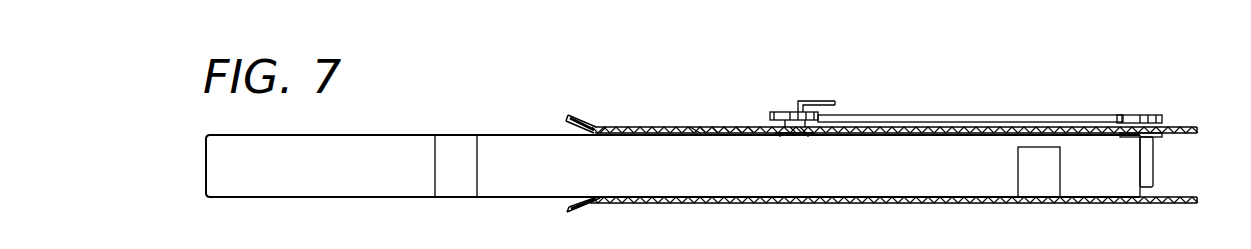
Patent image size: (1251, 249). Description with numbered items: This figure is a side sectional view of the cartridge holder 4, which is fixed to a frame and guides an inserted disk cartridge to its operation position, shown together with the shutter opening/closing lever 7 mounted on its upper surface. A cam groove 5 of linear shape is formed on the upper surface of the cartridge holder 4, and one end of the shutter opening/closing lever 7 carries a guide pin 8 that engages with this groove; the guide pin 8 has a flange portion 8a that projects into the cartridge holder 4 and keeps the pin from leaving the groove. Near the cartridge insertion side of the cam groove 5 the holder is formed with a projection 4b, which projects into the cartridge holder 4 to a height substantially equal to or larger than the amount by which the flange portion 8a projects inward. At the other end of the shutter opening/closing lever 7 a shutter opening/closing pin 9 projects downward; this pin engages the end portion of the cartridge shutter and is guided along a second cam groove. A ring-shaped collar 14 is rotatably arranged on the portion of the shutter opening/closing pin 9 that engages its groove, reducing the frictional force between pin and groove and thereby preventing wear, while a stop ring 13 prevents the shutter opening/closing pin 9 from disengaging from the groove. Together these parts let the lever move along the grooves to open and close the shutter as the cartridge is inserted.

The cartridge holder 4 is at (1175, 127).
The projection 4b is at (722, 127).
The cam groove 5 is at (643, 127).
The shutter opening/closing lever 7 is at (965, 115).
The guide pin 8 is at (793, 136).
The flange portion 8a is at (805, 137).
The shutter opening/closing pin 9 is at (1148, 172).
The stop ring 13 is at (1160, 138).
The collar 14 is at (1135, 115).